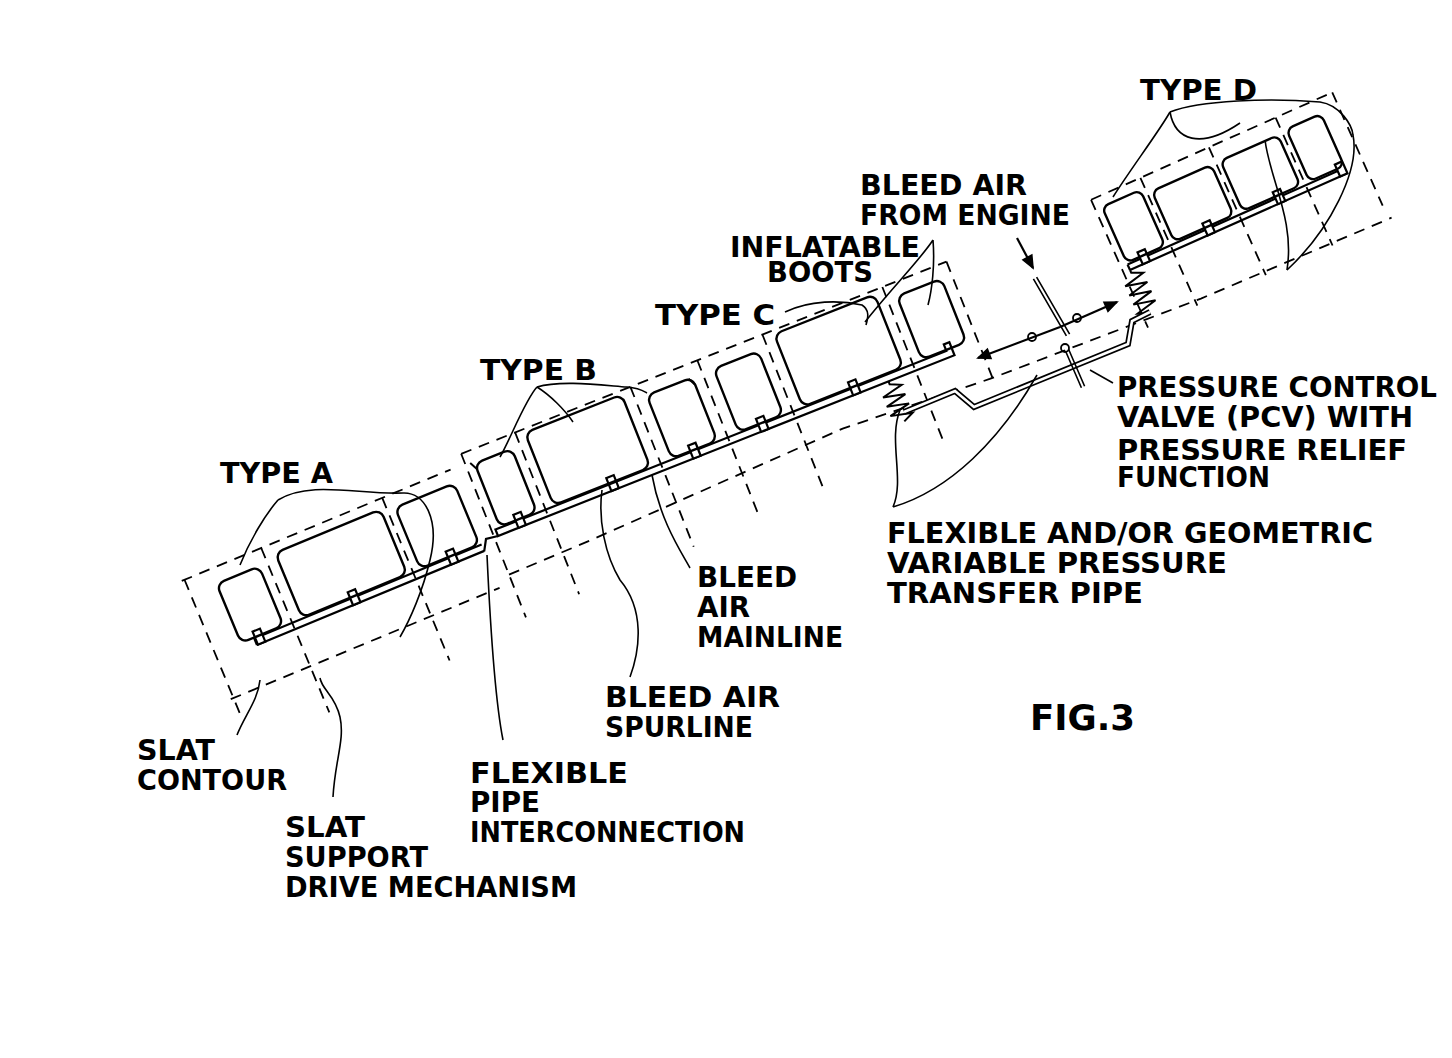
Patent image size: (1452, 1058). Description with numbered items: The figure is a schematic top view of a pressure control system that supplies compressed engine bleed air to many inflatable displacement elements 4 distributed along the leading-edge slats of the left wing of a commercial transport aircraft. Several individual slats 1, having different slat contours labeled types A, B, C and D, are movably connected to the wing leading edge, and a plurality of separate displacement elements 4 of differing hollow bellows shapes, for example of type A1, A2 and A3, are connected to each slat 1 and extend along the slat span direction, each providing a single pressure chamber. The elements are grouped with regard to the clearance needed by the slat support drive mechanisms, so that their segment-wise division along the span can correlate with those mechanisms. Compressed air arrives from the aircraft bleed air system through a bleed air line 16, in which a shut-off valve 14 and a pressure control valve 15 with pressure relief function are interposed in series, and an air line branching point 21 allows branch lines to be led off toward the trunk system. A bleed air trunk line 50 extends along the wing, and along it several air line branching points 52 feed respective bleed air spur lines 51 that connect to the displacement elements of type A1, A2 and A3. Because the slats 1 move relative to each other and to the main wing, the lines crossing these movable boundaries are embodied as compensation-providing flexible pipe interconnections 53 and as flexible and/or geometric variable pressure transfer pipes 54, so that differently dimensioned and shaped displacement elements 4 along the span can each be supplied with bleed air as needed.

The slat 1 is at (757, 311).
The displacement element 4 is at (797, 387).
The shut-off valve 14 is at (1030, 335).
The pressure control valve 15 is at (1077, 363).
The bleed air line 16 is at (1120, 340).
The air line branching point 21 is at (1065, 327).
The bleed air trunk line 50 is at (760, 440).
The bleed air spur line 51 is at (255, 640).
The air line branching point 52 is at (678, 468).
The flexible pipe interconnection 53 is at (478, 466).
The flexible and/or geometric variable pressure transfer pipe 54 is at (902, 415).
The displacement element of type A1 is at (235, 598).
The displacement element of type A2 is at (313, 557).
The displacement element of type A3 is at (427, 507).